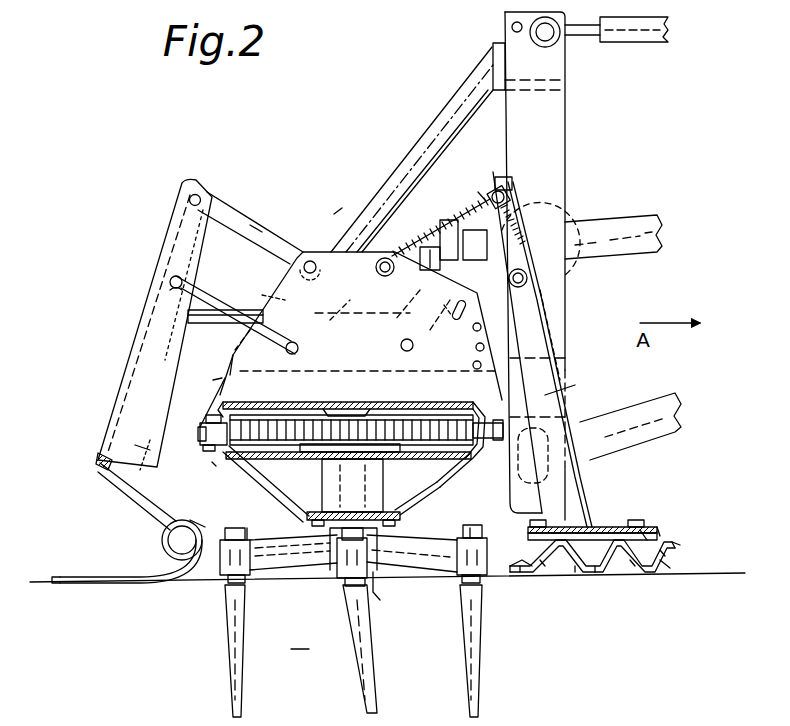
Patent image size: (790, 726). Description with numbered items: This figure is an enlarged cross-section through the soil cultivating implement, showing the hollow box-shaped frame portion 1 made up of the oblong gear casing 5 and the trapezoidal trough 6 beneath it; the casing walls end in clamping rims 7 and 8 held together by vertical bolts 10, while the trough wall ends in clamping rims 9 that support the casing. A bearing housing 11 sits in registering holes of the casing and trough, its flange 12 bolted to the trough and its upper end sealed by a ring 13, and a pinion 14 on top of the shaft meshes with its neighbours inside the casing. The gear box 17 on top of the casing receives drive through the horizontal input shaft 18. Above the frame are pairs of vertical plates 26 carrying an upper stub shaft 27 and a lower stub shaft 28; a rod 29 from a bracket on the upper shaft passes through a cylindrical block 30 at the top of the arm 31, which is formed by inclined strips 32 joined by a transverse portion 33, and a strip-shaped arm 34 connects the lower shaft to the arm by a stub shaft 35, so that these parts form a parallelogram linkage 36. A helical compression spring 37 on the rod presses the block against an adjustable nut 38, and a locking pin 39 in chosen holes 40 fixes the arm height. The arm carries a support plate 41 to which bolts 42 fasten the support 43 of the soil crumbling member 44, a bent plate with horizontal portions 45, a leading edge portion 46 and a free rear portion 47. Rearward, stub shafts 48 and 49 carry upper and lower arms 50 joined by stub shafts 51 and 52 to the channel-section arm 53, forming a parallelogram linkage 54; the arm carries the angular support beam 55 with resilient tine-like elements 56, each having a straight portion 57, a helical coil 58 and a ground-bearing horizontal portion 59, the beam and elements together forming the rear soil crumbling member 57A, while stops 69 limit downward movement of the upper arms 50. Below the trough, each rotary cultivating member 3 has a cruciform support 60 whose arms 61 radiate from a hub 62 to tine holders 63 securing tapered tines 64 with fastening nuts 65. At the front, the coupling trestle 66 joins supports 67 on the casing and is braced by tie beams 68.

The hollow box-shaped frame portion 1 is at (214, 462).
The rotary soil working or cultivating member 3 is at (300, 638).
The gear casing 5 is at (280, 404).
The trough 6 is at (243, 472).
The clamping rims 7 is at (200, 392).
The clamping rims 8 is at (200, 432).
The clamping rims 9 is at (198, 447).
The bolts 10 is at (540, 338).
The bearing housing 11 is at (366, 490).
The flange 12 is at (401, 515).
The ring 13 is at (326, 456).
The pinion 14 is at (405, 411).
The gear box 17 is at (334, 211).
The horizontal shaft 18 is at (520, 201).
The vertical plates 26 is at (341, 258).
The upper stub shaft 27 is at (374, 274).
The lower stub shaft 28 is at (404, 342).
The rod 29 is at (484, 202).
The cylindrical block 30 is at (506, 182).
The arm 31 is at (552, 329).
The inclined strips 32 is at (540, 377).
The transverse portion 33 is at (573, 402).
The strip-shaped arm 34 is at (486, 291).
The stub shaft 35 is at (527, 278).
The parallelogram linkage 36 is at (448, 314).
The helical compression spring 37 is at (468, 208).
The nut 38 is at (512, 194).
The locking pin 39 is at (455, 314).
The holes 40 is at (471, 352).
The support plate 41 is at (616, 523).
The bolts 42 is at (648, 523).
The support 43 is at (660, 526).
The soil crumbling member 44 is at (683, 540).
The upper and lower portions 45 is at (566, 538).
The edge portion 46 is at (664, 565).
The free rear portion 47 is at (524, 563).
The upper stub shaft 48 is at (336, 277).
The lower stub shaft 49 is at (299, 350).
The upper and lower arms 50 is at (226, 200).
The upper stub shaft 51 is at (199, 190).
The lower stub shaft 52 is at (168, 279).
The arm 53 is at (134, 328).
The parallelogram linkage 54 is at (286, 206).
The support beam 55 is at (138, 480).
The tine-like element 56 is at (204, 524).
The first straight portion 57 is at (132, 501).
The rear soil crumbling member 57A is at (94, 467).
The helical coil 58 is at (161, 539).
The second horizontal portion 59 is at (70, 573).
The cruciform support 60 is at (318, 566).
The arms 61 is at (276, 546).
The hub 62 is at (380, 596).
The tine holder 63 is at (223, 558).
The soil working tine 64 is at (230, 642).
The fastening nut 65 is at (250, 526).
The coupling member or trestle 66 is at (560, 126).
The supports 67 is at (385, 353).
The tie beams 68 is at (468, 86).
The stops 69 is at (274, 288).